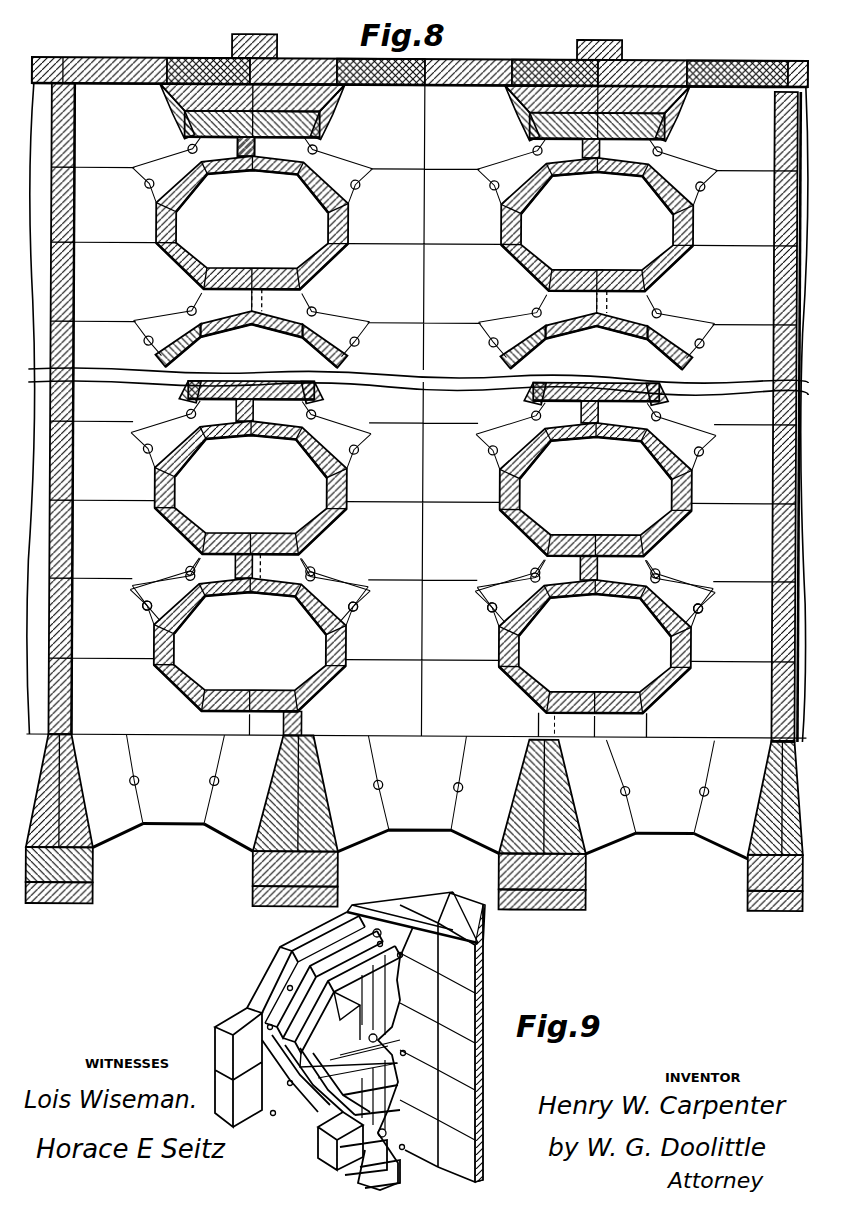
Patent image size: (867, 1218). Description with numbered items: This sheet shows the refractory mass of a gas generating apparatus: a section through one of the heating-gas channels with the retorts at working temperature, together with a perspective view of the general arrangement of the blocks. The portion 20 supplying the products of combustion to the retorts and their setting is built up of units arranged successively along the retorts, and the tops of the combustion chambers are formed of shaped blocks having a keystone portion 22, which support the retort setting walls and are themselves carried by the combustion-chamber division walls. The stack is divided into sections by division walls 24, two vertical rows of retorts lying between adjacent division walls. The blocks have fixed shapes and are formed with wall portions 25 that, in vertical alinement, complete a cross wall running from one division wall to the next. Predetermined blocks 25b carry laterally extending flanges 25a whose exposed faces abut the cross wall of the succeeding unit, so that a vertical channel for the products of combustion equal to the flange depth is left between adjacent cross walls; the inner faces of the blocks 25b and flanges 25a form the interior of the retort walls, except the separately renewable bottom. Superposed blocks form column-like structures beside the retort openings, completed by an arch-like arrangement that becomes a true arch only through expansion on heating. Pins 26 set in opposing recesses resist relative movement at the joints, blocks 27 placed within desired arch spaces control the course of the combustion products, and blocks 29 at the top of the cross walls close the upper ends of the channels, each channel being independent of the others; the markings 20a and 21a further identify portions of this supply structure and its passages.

In FIG. 8, the portion for supplying products of combustion 20 is at (418, 848).
In FIG. 8, the arch span 20a is at (407, 862).
In FIG. 8, the arch skewback 21a is at (733, 838).
In FIG. 8, the keystone portion 22 is at (421, 818).
In FIG. 8, the division wall 24 is at (775, 551).
In FIG. 9, the wall portion 25 is at (240, 1019).
In FIG. 8, the laterally extending flange 25a is at (578, 214).
In FIG. 9, the laterally extending flange 25a is at (393, 960).
In FIG. 9, the flanged block 25b is at (266, 992).
In FIG. 8, the dowel pin 26 is at (273, 320).
In FIG. 8, the block positioned within arch space 27 is at (256, 143).
In FIG. 9, the block positioned within arch space 27 is at (315, 948).
In FIG. 8, the top block 29 is at (228, 48).